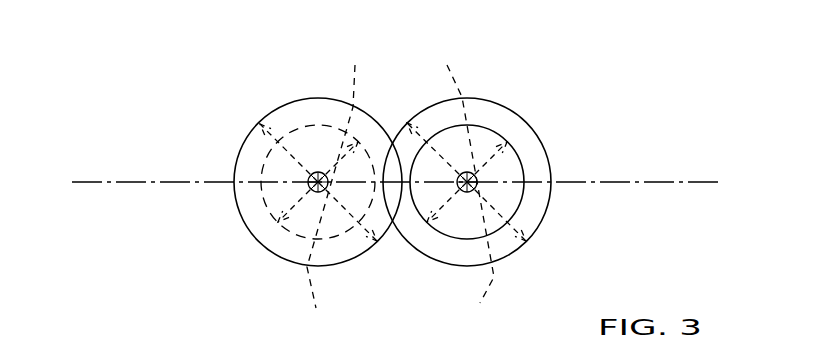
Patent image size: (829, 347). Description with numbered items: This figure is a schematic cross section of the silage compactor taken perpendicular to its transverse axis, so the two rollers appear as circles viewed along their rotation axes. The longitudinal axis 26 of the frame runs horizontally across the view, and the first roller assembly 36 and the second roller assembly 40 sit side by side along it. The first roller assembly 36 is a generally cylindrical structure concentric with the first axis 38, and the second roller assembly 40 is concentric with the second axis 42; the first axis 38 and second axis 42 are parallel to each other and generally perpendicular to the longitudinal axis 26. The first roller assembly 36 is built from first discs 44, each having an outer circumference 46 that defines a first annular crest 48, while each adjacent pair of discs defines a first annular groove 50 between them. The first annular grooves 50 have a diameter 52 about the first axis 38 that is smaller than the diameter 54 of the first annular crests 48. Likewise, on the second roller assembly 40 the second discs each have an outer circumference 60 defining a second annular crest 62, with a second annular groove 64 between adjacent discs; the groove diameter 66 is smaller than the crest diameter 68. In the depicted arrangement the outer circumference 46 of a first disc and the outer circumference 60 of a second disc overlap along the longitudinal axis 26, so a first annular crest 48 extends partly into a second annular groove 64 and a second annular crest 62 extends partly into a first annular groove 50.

The longitudinal axis 26 is at (94, 182).
The first roller assembly 36 is at (302, 94).
The first axis 38 is at (331, 201).
The second roller assembly 40 is at (478, 93).
The second axis 42 is at (458, 171).
The first discs 44 is at (345, 263).
The outer circumference 46 is at (245, 223).
The first annular crest 48 is at (252, 131).
The first annular groove 50 is at (297, 127).
The diameter 52 is at (318, 154).
The diameter 54 is at (264, 165).
The outer circumference 60 is at (505, 108).
The second annular crest 62 is at (549, 158).
The second annular groove 64 is at (522, 200).
The diameter 66 is at (497, 131).
The diameter 68 is at (462, 320).